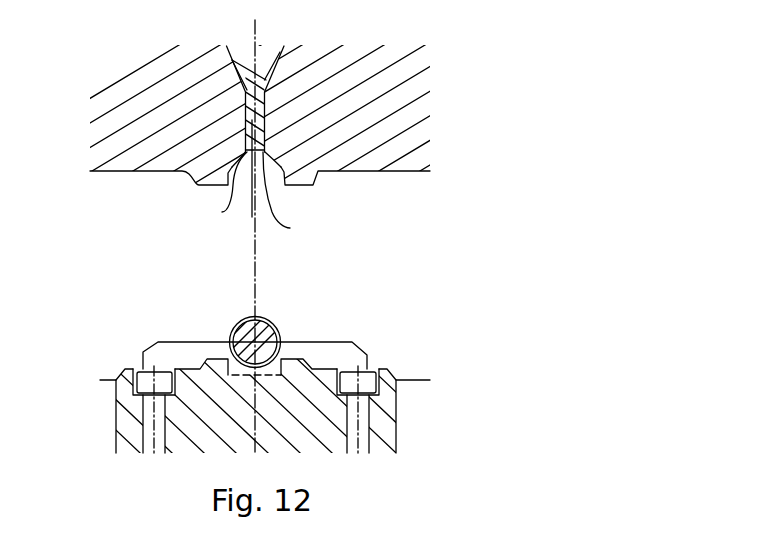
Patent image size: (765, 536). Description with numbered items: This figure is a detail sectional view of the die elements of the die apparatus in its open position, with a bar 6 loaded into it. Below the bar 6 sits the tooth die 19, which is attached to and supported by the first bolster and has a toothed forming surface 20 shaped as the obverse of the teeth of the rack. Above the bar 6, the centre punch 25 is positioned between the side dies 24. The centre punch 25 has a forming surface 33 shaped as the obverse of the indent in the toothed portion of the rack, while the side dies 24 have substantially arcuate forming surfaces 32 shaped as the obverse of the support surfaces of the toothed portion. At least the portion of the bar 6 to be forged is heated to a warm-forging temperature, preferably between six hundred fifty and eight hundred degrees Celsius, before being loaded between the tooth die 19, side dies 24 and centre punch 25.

The bar 6 is at (273, 324).
The tooth die 19 is at (313, 390).
The toothed forming surface 20 is at (231, 358).
The side dies 24 is at (125, 158).
The centre punch 25 is at (284, 47).
The arcuate forming surfaces 32 is at (222, 212).
The forming surface 33 is at (252, 217).